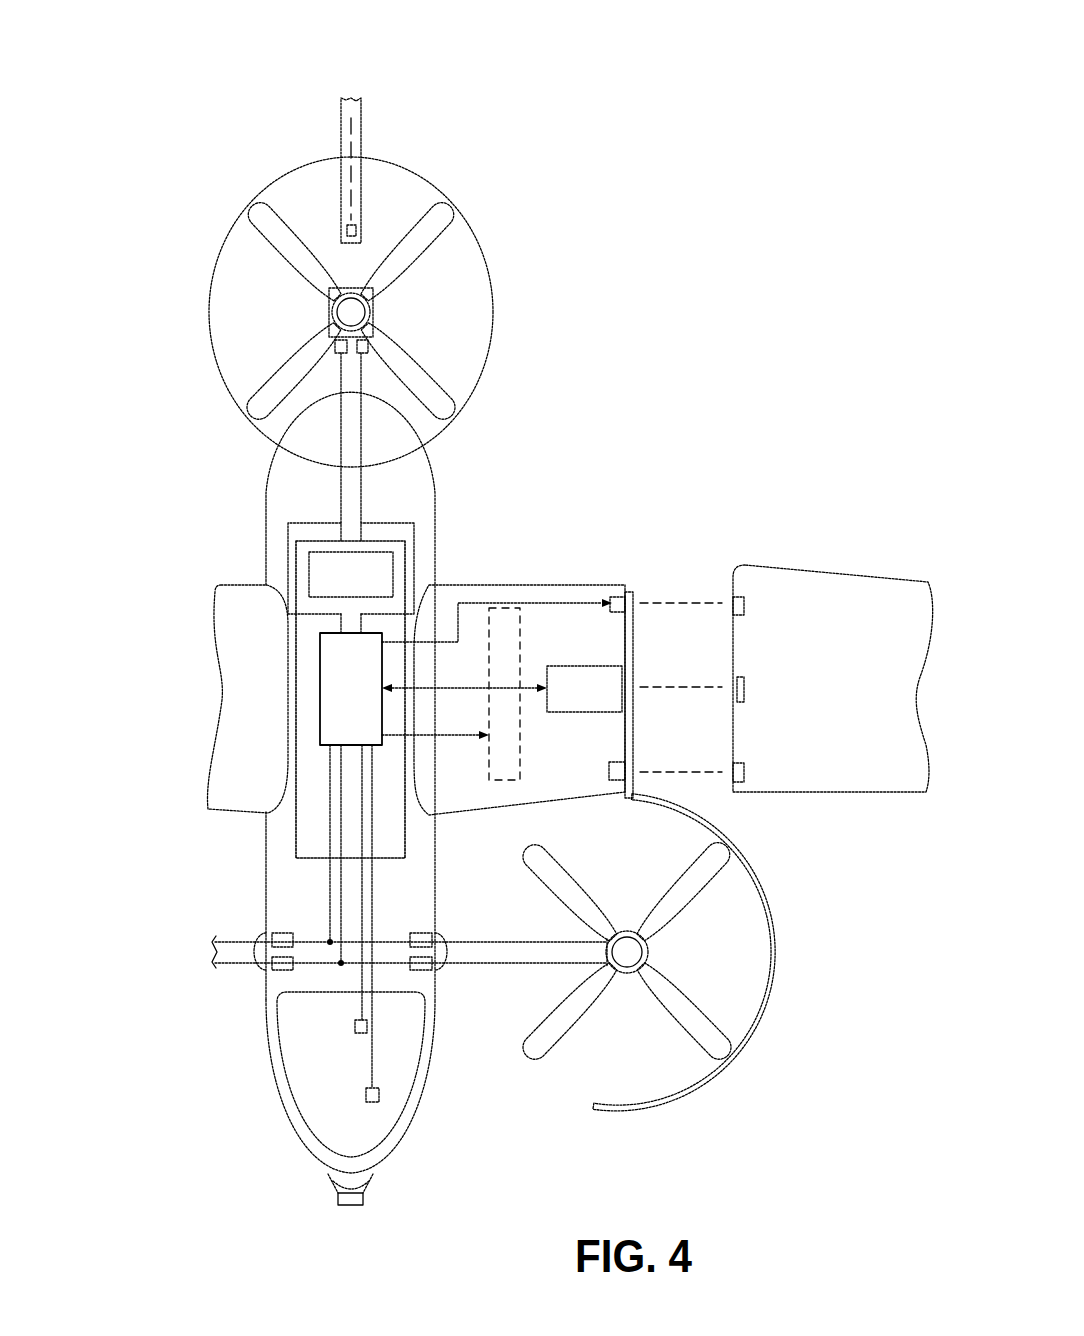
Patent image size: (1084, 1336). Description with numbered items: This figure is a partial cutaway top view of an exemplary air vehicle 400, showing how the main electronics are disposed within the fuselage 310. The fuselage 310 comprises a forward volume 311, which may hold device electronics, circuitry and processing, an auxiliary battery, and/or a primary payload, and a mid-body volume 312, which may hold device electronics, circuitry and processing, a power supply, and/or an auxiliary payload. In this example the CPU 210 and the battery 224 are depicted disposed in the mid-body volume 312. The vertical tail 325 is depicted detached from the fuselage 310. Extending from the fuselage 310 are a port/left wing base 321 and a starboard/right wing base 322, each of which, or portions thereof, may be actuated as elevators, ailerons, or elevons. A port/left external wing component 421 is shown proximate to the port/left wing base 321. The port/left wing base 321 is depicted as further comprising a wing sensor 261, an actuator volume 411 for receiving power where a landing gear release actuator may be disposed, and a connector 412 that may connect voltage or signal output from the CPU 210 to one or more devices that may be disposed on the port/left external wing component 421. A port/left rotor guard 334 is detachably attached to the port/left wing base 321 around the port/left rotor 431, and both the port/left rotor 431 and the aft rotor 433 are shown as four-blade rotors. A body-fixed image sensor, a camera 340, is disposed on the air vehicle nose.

The air vehicle 400 is at (211, 112).
The vertical tail 325 is at (358, 118).
The aft rotor 433 is at (522, 259).
The battery 224 is at (322, 552).
The fuselage 310 is at (437, 528).
The starboard/right wing base 322 is at (250, 585).
The port/left wing base 321 is at (545, 583).
The port/left external wing component 421 is at (860, 575).
The actuator volume 411 is at (489, 639).
The connector 412 is at (617, 597).
The CPU 210 is at (335, 660).
The mid-body volume 312 is at (312, 803).
The wing sensor 261 is at (582, 713).
The port/left rotor guard 334 is at (768, 965).
The forward volume 311 is at (303, 1025).
The port/left rotor 431 is at (526, 1074).
The camera 340 is at (296, 1203).